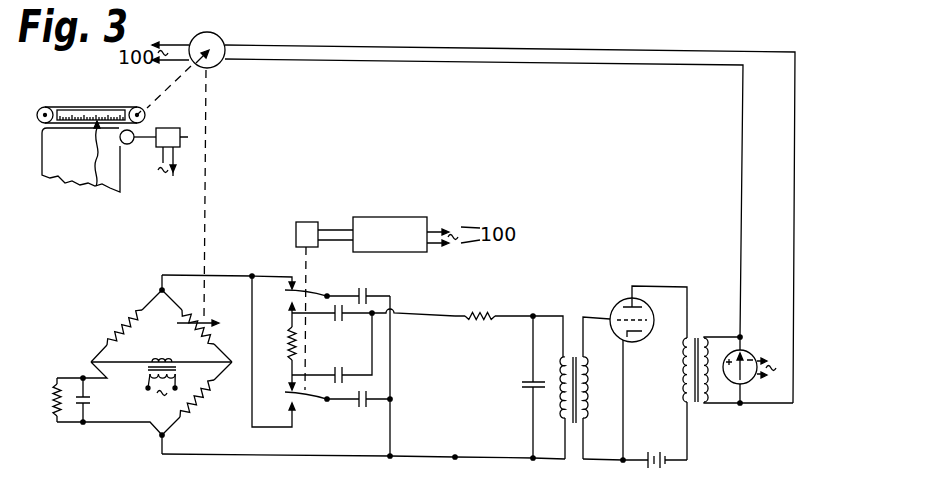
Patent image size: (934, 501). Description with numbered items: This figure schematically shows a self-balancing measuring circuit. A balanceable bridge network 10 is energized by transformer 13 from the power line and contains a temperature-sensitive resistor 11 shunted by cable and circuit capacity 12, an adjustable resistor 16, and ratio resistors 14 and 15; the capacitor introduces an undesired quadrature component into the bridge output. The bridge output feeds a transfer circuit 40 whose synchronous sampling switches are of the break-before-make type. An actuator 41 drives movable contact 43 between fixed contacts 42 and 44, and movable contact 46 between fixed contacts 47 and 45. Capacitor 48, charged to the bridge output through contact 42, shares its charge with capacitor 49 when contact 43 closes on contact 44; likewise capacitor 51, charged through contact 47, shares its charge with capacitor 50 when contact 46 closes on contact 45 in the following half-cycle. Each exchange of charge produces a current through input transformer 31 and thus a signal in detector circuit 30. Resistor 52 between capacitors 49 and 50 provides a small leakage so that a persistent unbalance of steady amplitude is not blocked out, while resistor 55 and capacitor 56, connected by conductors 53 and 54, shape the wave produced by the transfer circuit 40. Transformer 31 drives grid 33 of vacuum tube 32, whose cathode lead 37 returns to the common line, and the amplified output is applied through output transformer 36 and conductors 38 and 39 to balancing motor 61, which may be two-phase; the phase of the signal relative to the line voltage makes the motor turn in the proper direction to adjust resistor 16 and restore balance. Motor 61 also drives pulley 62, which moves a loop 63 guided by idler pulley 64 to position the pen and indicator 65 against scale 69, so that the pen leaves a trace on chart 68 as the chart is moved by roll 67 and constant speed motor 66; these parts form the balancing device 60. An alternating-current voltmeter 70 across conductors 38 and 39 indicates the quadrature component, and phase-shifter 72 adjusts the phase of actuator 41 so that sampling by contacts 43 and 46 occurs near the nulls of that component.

The balanceable bridge network 10 is at (70, 328).
The resistor 11 is at (50, 393).
The capacitor 12 is at (93, 398).
The transformer 13 is at (157, 357).
The resistor 14 is at (130, 310).
The resistor 15 is at (196, 409).
The resistor 16 is at (219, 327).
The measuring means 30 is at (598, 273).
The input transformer 31 is at (577, 428).
The vacuum tube 32 is at (629, 299).
The grid 33 is at (598, 317).
The output transformer 36 is at (697, 337).
The cathode lead 37 is at (626, 405).
The conductor 38 is at (727, 337).
The conductor 39 is at (728, 407).
The transfer circuit 40 is at (405, 286).
The actuator 41 is at (303, 222).
The contact 42 is at (291, 283).
The movable contact 43 is at (311, 290).
The contact 44 is at (291, 312).
The contact 45 is at (291, 378).
The movable contact 46 is at (308, 402).
The contact 47 is at (291, 413).
The capacitor 48 is at (361, 292).
The capacitor 49 is at (343, 321).
The capacitor 50 is at (343, 367).
The capacitor 51 is at (362, 415).
The resistor 52 is at (288, 341).
The conductor 53 is at (418, 314).
The conductor 54 is at (420, 457).
The resistor 55 is at (490, 315).
The capacitor 56 is at (521, 385).
The balancing device 60 is at (35, 142).
The balancing motor 61 is at (217, 68).
The pulley 62 is at (135, 107).
The loop 63 is at (88, 107).
The idler pulley 64 is at (43, 107).
The pen and indicator 65 is at (98, 122).
The constant speed motor 66 is at (168, 128).
The roll 67 is at (130, 146).
The chart 68 is at (58, 181).
The scale 69 is at (68, 110).
The alternating-current voltmeter 70 is at (748, 353).
The phase-shifter 72 is at (403, 217).